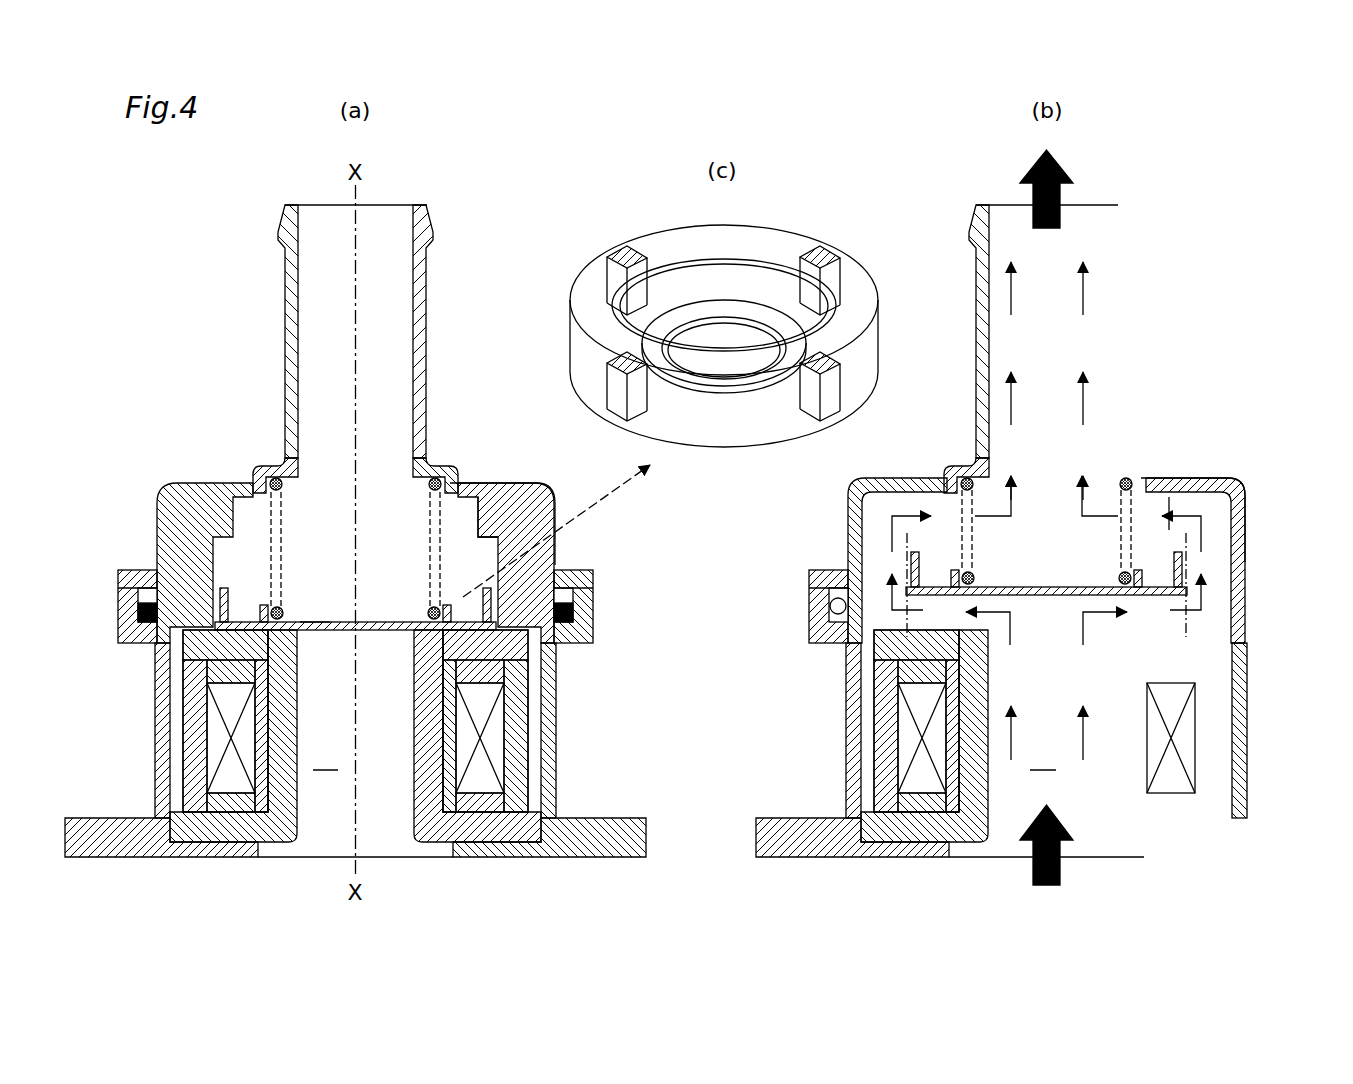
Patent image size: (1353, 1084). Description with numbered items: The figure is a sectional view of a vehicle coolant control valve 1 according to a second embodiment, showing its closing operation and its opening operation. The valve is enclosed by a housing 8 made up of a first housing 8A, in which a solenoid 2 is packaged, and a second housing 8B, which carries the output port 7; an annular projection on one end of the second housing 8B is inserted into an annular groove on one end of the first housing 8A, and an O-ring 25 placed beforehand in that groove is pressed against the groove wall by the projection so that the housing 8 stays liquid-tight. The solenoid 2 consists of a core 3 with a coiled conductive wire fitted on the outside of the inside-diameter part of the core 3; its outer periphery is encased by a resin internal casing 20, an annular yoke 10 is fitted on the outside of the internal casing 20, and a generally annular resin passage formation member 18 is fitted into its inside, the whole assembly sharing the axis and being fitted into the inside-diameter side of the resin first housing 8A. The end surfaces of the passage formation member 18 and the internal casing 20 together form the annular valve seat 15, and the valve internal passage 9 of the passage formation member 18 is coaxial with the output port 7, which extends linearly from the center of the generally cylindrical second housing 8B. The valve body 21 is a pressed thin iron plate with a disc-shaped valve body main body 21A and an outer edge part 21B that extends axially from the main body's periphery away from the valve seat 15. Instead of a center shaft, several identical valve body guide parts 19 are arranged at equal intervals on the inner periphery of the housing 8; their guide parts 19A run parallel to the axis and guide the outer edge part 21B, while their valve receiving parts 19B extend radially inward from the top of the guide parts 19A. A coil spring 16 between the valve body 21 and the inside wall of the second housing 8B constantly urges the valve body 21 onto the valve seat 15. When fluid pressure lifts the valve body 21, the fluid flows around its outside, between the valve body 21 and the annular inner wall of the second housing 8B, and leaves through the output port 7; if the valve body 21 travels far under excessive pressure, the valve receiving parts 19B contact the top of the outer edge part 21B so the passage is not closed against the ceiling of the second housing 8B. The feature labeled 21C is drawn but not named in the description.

The vehicle coolant control valve 1 is at (256, 393).
The solenoid 2 is at (221, 745).
The core 3 is at (467, 737).
The output port 7 is at (428, 350).
The housing 8 is at (597, 606).
The first housing 8A is at (620, 814).
The second housing 8B is at (508, 487).
The valve internal passage 9 is at (684, 755).
The yoke 10 is at (533, 688).
The valve seat 15 is at (312, 632).
The coil spring 16 is at (426, 486).
The passage formation member 18 is at (397, 846).
The valve body guide parts 19 is at (177, 513).
The guide parts 19A is at (256, 486).
The valve receiving parts 19B is at (495, 548).
The internal casing 20 is at (516, 743).
The valve body 21 is at (369, 632).
The valve body main body 21A is at (306, 618).
The outer edge part 21B is at (229, 600).
The seal projection 21C is at (449, 604).
The O-ring 25 is at (137, 606).